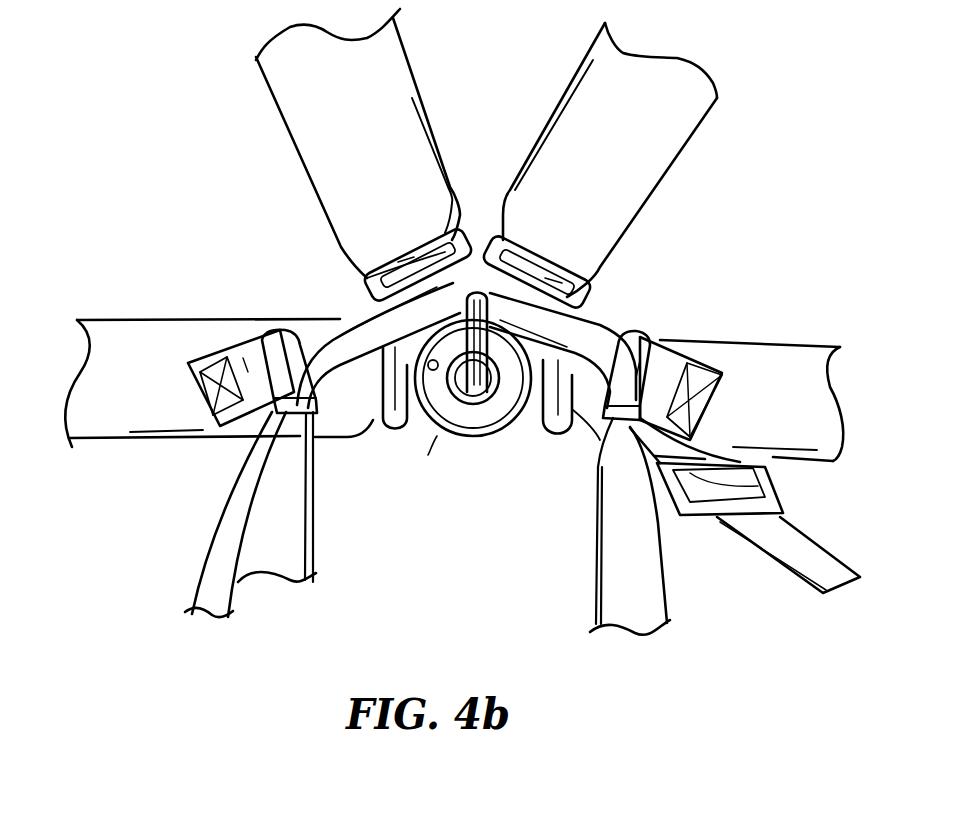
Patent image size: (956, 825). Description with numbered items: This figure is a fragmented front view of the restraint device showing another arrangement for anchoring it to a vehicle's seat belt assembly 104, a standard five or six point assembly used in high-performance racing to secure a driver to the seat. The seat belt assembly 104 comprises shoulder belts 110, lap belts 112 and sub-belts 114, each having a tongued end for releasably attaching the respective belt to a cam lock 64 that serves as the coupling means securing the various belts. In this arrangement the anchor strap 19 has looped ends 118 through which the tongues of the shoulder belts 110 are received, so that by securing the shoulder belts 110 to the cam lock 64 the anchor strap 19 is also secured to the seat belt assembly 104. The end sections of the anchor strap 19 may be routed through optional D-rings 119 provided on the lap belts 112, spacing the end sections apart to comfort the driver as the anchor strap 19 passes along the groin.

The seat belt assembly 104 is at (698, 246).
The shoulder belts 110 is at (560, 100).
The looped ends 118 is at (350, 300).
The cam lock 64 is at (447, 430).
The lap belts 112 is at (177, 317).
The D-rings 119 is at (283, 322).
The sub-belts 114 is at (320, 532).
The anchor strap 19 is at (197, 538).